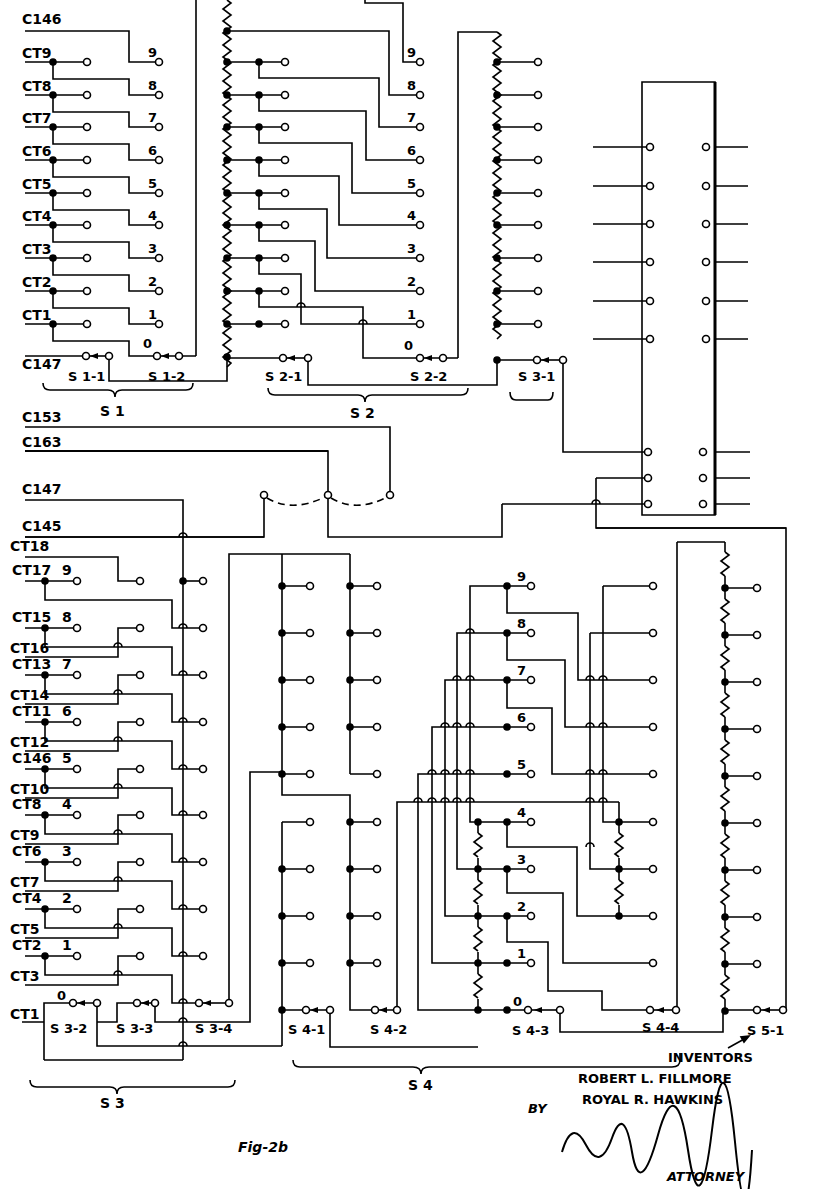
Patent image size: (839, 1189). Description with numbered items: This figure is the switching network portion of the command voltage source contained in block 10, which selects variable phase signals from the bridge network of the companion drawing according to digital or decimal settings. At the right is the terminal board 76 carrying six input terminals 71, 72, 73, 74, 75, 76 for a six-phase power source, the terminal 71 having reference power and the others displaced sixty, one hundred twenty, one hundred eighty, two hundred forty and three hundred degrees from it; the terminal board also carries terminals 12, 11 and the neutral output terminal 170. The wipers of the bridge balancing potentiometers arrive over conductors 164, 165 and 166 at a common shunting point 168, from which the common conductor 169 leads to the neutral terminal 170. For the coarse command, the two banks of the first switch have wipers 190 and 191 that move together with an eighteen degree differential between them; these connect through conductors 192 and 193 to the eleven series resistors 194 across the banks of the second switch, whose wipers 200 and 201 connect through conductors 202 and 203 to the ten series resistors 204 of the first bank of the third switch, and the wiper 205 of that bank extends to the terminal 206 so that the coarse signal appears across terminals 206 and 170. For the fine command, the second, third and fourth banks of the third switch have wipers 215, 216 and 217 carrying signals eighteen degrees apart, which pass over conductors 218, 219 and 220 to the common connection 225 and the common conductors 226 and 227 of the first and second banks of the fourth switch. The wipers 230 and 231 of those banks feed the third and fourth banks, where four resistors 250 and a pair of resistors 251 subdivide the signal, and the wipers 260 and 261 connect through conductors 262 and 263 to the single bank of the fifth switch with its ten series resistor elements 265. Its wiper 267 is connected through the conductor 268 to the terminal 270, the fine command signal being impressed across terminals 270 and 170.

The command voltage source block 10 is at (605, 28).
The terminal 11 is at (741, 478).
The terminal 12 is at (739, 452).
The terminal 71 is at (617, 146).
The terminal 72 is at (617, 185).
The terminal 73 is at (617, 223).
The terminal 74 is at (617, 261).
The terminal 75 is at (617, 300).
The terminal board 76 is at (686, 82).
The conductor 164 is at (211, 537).
The conductor 165 is at (270, 451).
The conductor 166 is at (176, 432).
The common shunting point 168 is at (368, 486).
The common conductor 169 is at (445, 538).
The neutral output terminal 170 is at (644, 508).
The wiper 190 is at (84, 352).
The wiper 191 is at (161, 353).
The conductor 192 is at (226, 366).
The conductor 193 is at (196, 190).
The series resistors 194 is at (217, 62).
The wiper 200 is at (318, 344).
The wiper 201 is at (445, 354).
The conductor 202 is at (360, 385).
The conductor 203 is at (458, 229).
The series resistors 204 is at (486, 113).
The wiper 205 is at (560, 356).
The terminal 206 is at (644, 456).
The wiper 215 is at (97, 1001).
The wiper 216 is at (153, 1001).
The wiper 217 is at (227, 1002).
The conductor 218 is at (253, 1046).
The conductor 219 is at (249, 778).
The conductor 220 is at (233, 724).
The common connection 225 is at (296, 828).
The common connecting conductor 226 is at (281, 669).
The common conductor 227 is at (350, 669).
The wiper 230 is at (330, 1004).
The wiper 231 is at (392, 1005).
The resistors 250 is at (464, 977).
The pair of resistors 251 is at (638, 849).
The wiper 260 is at (560, 1006).
The wiper 261 is at (669, 1012).
The conductor 262 is at (703, 1030).
The conductor 263 is at (677, 715).
The series resistor elements 265 is at (712, 629).
The wiper 267 is at (778, 1012).
The conductor 268 is at (641, 533).
The terminal 270 is at (644, 482).